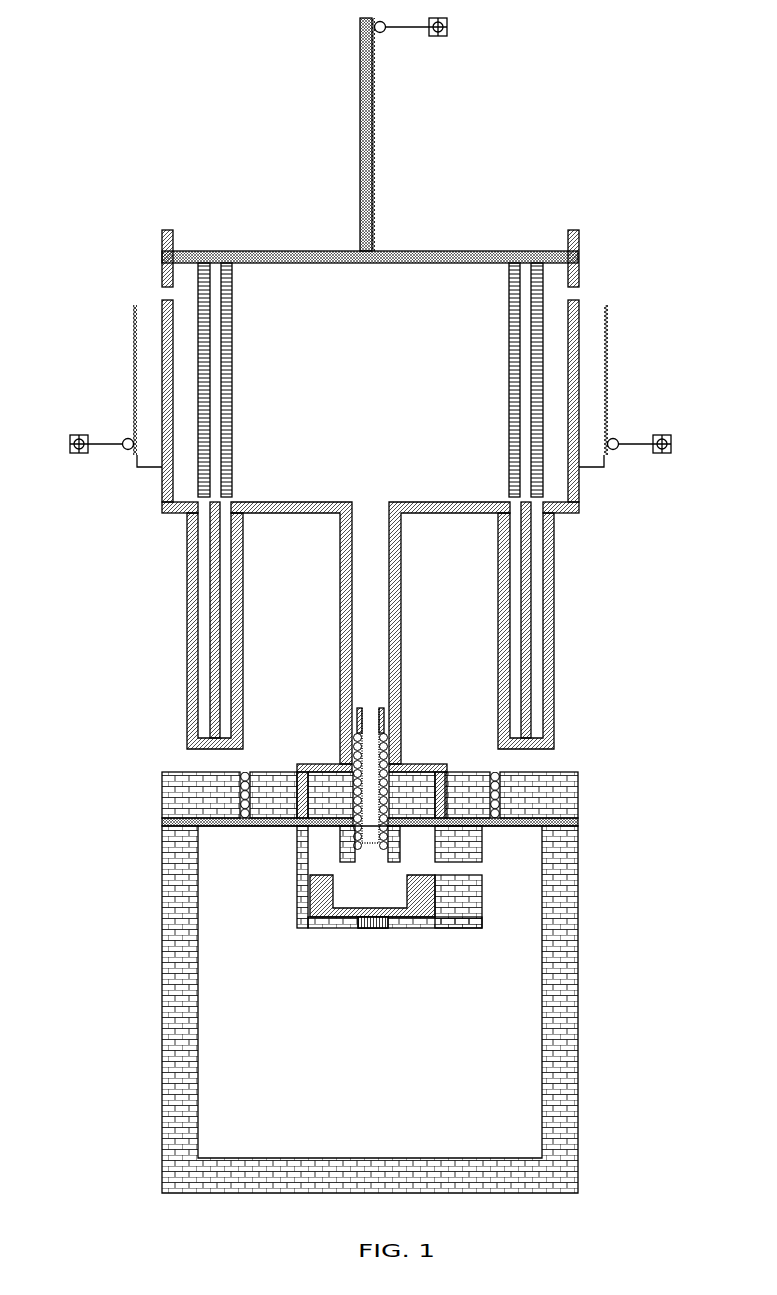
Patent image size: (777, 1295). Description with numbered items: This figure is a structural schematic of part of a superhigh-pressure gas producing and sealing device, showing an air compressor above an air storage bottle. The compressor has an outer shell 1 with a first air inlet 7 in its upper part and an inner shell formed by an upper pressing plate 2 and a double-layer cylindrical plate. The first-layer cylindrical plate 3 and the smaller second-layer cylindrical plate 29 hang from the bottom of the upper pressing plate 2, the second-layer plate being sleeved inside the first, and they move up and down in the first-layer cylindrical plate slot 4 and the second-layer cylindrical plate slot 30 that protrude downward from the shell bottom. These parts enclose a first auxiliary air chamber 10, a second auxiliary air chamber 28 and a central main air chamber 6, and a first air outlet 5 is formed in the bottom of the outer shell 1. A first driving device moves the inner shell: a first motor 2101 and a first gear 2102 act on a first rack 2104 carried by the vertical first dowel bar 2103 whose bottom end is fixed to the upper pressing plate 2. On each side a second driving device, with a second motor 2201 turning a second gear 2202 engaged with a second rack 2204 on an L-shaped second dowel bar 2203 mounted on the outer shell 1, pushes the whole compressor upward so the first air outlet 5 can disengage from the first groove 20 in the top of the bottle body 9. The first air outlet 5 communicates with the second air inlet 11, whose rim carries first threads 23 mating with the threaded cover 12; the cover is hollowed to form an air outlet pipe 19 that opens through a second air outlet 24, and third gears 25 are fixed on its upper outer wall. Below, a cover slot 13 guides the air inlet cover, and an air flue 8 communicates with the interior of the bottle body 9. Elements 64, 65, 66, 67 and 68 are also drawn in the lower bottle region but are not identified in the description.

The outer shell 1 is at (157, 299).
The upper pressing plate 2 is at (422, 251).
The first-layer cylindrical plate 3 is at (196, 459).
The first-layer cylindrical plate slot 4 is at (200, 599).
The first air outlet 5 is at (361, 608).
The main air chamber 6 is at (336, 466).
The first air inlet 7 is at (161, 289).
The air flue 8 is at (366, 930).
The bottle body 9 is at (579, 773).
The first auxiliary air chamber 10 is at (178, 493).
The second air inlet 11 is at (367, 859).
The threaded cover 12 is at (358, 705).
The cover slot 13 is at (314, 848).
The air outlet pipe 19 is at (371, 740).
The first groove 20 is at (298, 765).
The first threads 23 is at (385, 858).
The second air outlet 24 is at (397, 829).
The third gears 25 is at (357, 717).
The second auxiliary air chamber 28 is at (190, 514).
The second-layer cylindrical plate 29 is at (233, 426).
The second-layer cylindrical plate slot 30 is at (221, 688).
The top refractory block 64 is at (242, 787).
The sealing coil 65 is at (241, 805).
The bottom insert 66 is at (404, 892).
The base brick layer 67 is at (447, 930).
The support brick 68 is at (484, 870).
The first motor 2101 is at (508, 60).
The first gear 2102 is at (388, 36).
The first dowel bar 2103 is at (358, 87).
The first rack 2104 is at (435, 161).
The second motor 2201 is at (75, 457).
The second gear 2202 is at (123, 432).
The second dowel bar 2203 is at (135, 470).
The second rack 2204 is at (132, 356).